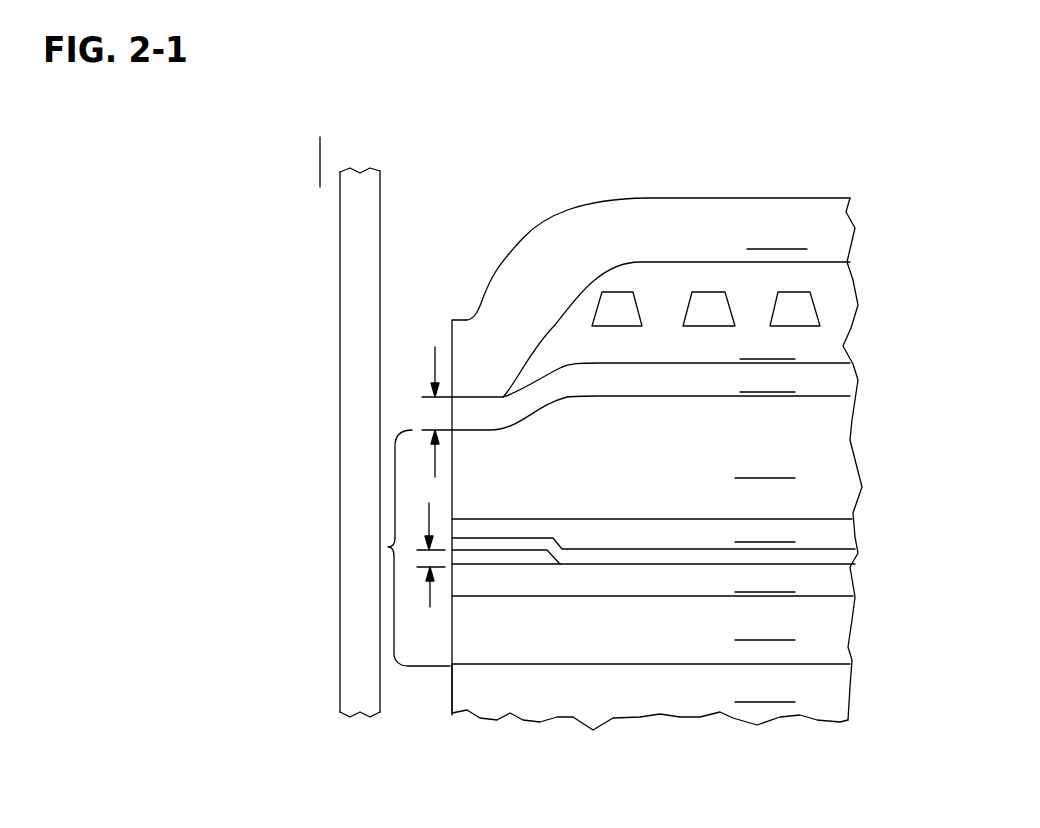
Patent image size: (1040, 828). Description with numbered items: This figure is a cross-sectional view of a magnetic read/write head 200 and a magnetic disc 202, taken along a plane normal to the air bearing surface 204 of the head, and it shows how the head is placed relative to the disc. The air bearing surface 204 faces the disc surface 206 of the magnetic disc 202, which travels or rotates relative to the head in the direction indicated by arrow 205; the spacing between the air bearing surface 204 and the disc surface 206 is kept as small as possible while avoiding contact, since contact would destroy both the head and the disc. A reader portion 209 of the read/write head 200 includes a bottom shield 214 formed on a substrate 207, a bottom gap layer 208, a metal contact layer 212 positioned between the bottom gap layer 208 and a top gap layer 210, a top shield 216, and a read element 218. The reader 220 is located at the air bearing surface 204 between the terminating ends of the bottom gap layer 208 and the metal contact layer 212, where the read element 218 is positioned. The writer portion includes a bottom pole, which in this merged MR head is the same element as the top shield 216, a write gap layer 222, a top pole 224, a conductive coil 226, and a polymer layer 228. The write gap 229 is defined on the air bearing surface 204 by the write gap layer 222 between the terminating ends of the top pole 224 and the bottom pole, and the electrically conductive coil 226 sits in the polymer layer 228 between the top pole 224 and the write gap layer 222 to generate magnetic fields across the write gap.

The read/write head 200 is at (884, 193).
The magnetic disc 202 is at (352, 240).
The air bearing surface 204 is at (450, 335).
The arrow 205 is at (310, 153).
The disc surface 206 is at (380, 183).
The substrate 207 is at (623, 688).
The bottom gap layer 208 is at (652, 582).
The reader portion 209 is at (368, 545).
The top gap layer 210 is at (652, 531).
The metal contact layer 212 is at (842, 555).
The bottom shield 214 is at (651, 640).
The top shield 216 is at (636, 437).
The read element 218 is at (490, 558).
The reader 220 is at (420, 557).
The write gap layer 222 is at (636, 380).
The top pole 224 is at (658, 259).
The conductive coil 226 is at (802, 313).
The polymer layer 228 is at (676, 329).
The write gap 229 is at (425, 415).